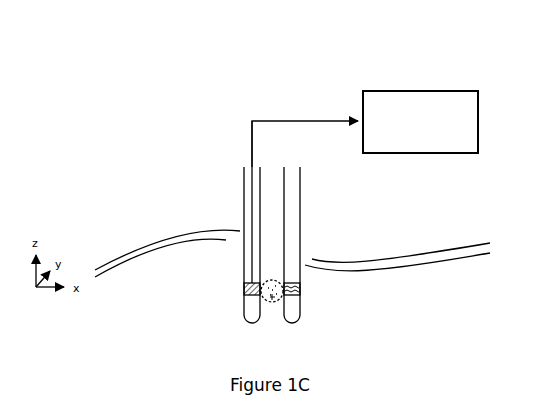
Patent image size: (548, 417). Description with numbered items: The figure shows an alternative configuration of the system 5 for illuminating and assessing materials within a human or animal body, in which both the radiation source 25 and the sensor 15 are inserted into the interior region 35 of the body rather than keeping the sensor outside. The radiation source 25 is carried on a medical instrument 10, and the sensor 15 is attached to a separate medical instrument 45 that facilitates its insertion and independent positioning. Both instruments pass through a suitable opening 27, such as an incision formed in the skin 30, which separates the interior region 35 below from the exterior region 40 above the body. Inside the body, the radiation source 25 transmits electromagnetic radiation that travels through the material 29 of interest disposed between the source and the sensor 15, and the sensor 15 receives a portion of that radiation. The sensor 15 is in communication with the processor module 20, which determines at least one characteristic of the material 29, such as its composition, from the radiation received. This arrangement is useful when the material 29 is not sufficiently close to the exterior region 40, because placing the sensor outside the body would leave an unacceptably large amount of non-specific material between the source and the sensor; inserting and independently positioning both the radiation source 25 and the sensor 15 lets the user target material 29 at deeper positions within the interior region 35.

The system 5 is at (305, 86).
The medical instrument 10 is at (310, 322).
The sensor 15 is at (246, 288).
The processor module 20 is at (480, 126).
The radiation source 25 is at (302, 289).
The opening 27 is at (315, 245).
The material 29 is at (272, 302).
The skin 30 is at (105, 275).
The interior region 35 is at (441, 296).
The exterior region 40 is at (443, 226).
The medical instrument 45 is at (237, 321).